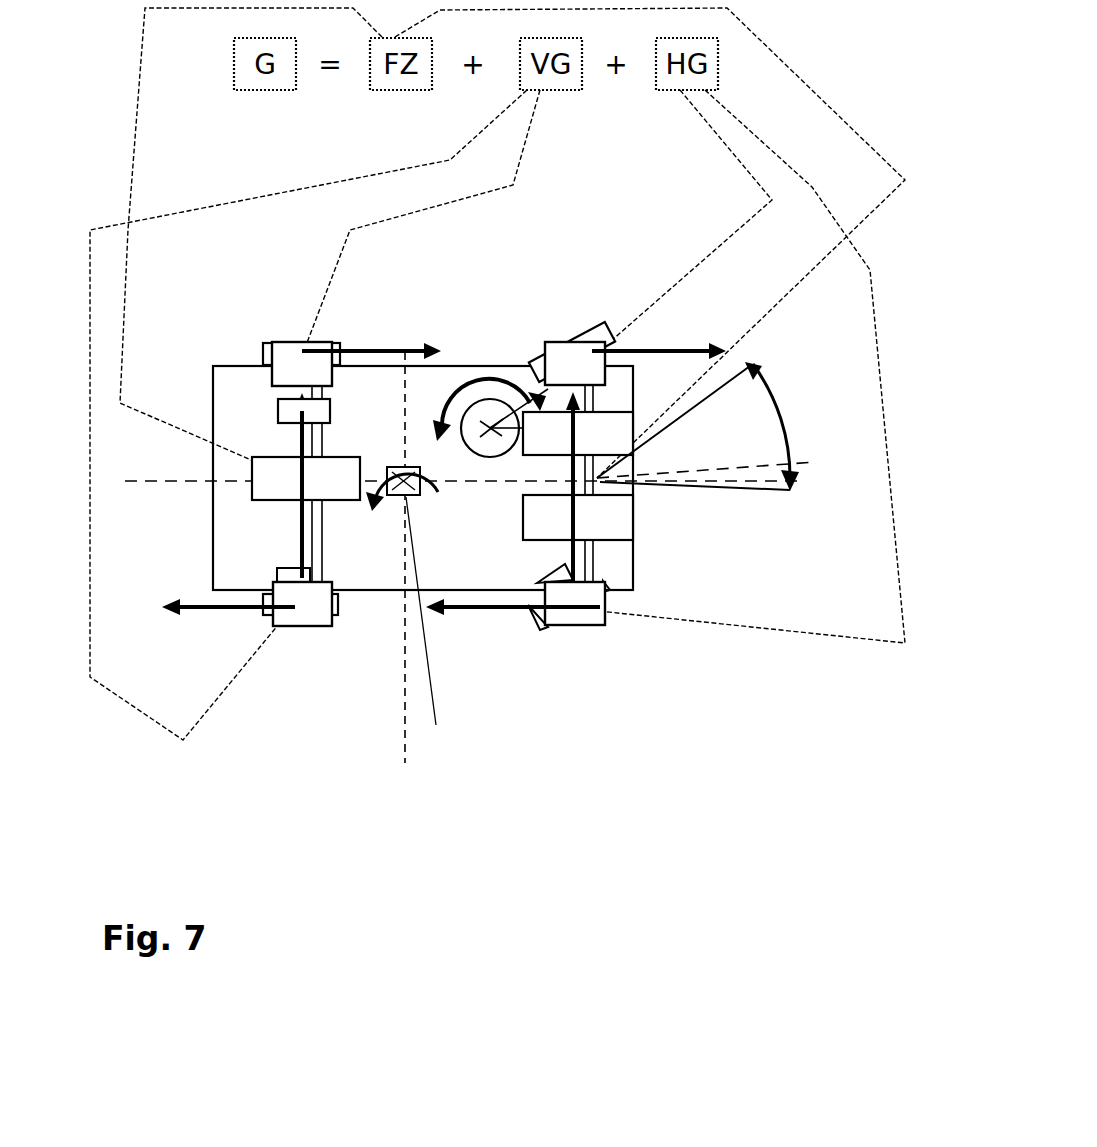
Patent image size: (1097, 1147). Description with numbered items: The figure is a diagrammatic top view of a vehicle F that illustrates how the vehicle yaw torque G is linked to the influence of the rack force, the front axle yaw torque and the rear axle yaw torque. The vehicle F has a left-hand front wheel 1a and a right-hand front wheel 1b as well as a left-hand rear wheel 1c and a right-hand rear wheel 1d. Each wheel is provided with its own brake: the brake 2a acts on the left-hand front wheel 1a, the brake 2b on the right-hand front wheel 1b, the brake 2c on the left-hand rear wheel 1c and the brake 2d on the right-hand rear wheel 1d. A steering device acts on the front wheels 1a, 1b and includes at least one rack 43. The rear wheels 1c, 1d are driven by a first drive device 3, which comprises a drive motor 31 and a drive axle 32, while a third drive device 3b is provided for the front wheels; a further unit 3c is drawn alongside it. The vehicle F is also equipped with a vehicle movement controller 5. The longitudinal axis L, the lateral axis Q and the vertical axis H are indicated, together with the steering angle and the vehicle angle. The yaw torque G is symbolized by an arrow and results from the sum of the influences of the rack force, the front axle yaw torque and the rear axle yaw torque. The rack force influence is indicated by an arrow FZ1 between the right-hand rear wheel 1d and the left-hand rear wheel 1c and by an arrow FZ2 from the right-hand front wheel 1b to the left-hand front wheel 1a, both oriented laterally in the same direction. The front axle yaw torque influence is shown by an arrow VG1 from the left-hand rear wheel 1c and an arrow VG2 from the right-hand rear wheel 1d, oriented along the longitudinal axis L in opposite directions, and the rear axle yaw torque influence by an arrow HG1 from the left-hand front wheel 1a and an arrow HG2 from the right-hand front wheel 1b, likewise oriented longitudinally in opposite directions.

The left-hand front wheel 1a is at (597, 327).
The right-hand front wheel 1b is at (548, 627).
The left-hand rear wheel 1c is at (263, 348).
The right-hand rear wheel 1d is at (335, 622).
The brake 2a is at (560, 350).
The brake 2b is at (585, 613).
The brake 2c is at (288, 350).
The brake 2d is at (310, 613).
The first drive device 3 is at (232, 464).
The drive motor 31 is at (265, 473).
The drive axle 32 is at (336, 484).
The third drive device 3b is at (615, 427).
The right drive gear unit 3c is at (615, 527).
The rack 43 is at (597, 552).
The vehicle movement controller 5 is at (402, 497).
The vehicle F is at (235, 382).
The vehicle yaw torque G is at (400, 458).
The vertical axis H is at (430, 627).
The longitudinal axis L is at (183, 481).
The lateral axis Q is at (403, 738).
The arrow FZ1 is at (298, 532).
The arrow FZ2 is at (582, 490).
The arrow VG1 is at (371, 340).
The arrow VG2 is at (228, 624).
The arrow HG1 is at (659, 340).
The arrow HG2 is at (513, 624).